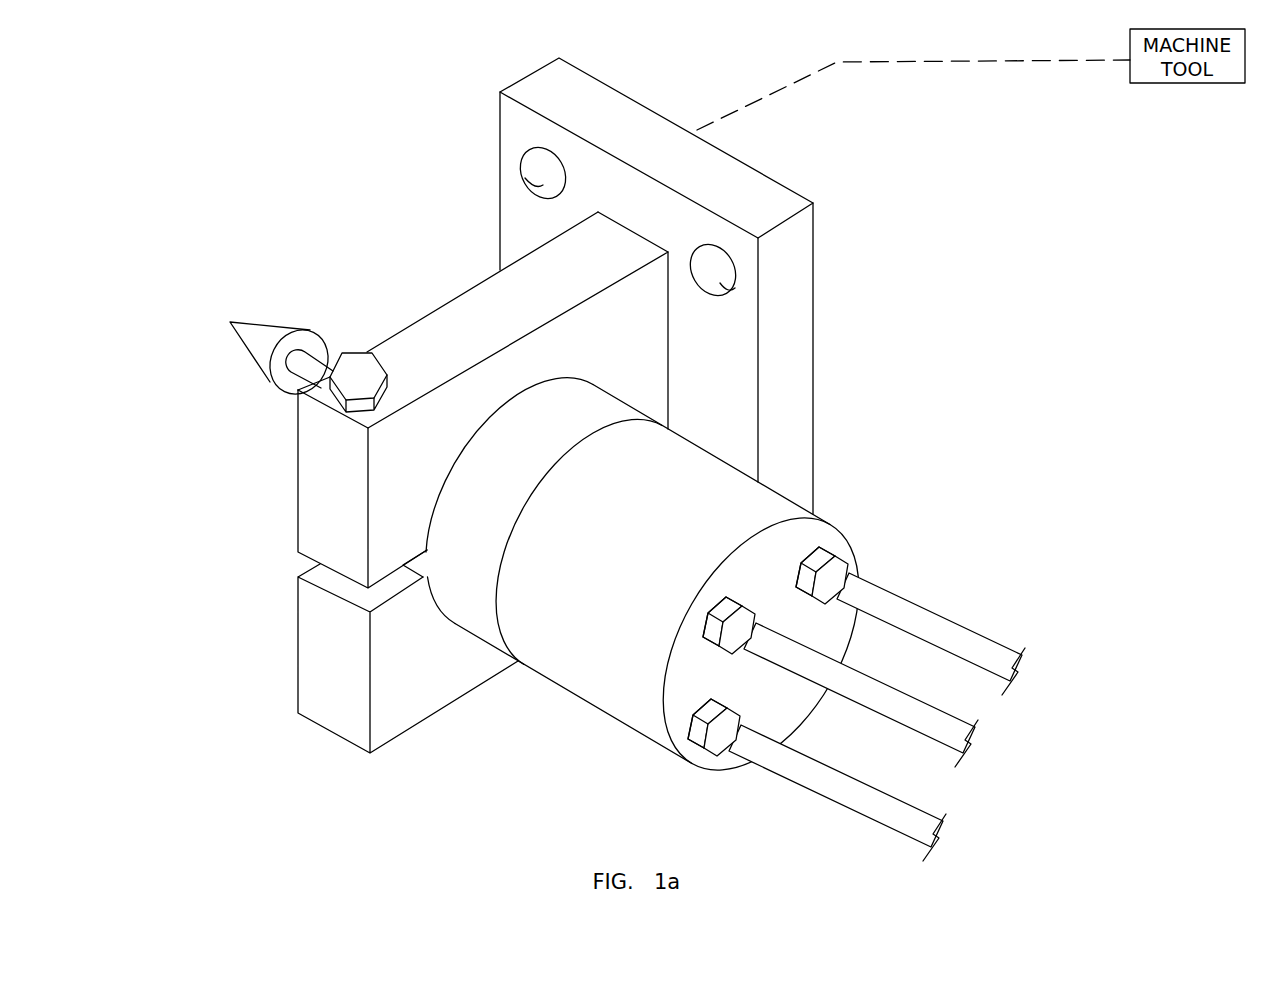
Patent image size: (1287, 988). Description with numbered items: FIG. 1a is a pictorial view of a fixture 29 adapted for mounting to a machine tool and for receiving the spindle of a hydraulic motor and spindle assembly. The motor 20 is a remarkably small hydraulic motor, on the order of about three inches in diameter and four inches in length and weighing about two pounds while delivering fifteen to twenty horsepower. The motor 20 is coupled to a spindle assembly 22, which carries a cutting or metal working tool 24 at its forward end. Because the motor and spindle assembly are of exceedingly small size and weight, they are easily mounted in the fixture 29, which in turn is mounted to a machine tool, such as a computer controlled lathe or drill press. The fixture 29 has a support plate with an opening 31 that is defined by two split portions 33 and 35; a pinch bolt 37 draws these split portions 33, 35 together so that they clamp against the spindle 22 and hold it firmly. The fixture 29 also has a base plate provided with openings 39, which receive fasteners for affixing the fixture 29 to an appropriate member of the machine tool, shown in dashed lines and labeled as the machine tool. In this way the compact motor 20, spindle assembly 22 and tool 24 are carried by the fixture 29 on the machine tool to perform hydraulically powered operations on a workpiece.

The motor 20 is at (602, 648).
The spindle assembly 22 is at (470, 605).
The cutting or metal working tool 24 is at (247, 355).
The fixture 29 is at (880, 324).
The opening 31 is at (472, 442).
The split portion 33 is at (318, 483).
The split portion 35 is at (337, 655).
The pinch bolt 37 is at (359, 373).
The openings 39 is at (735, 288).